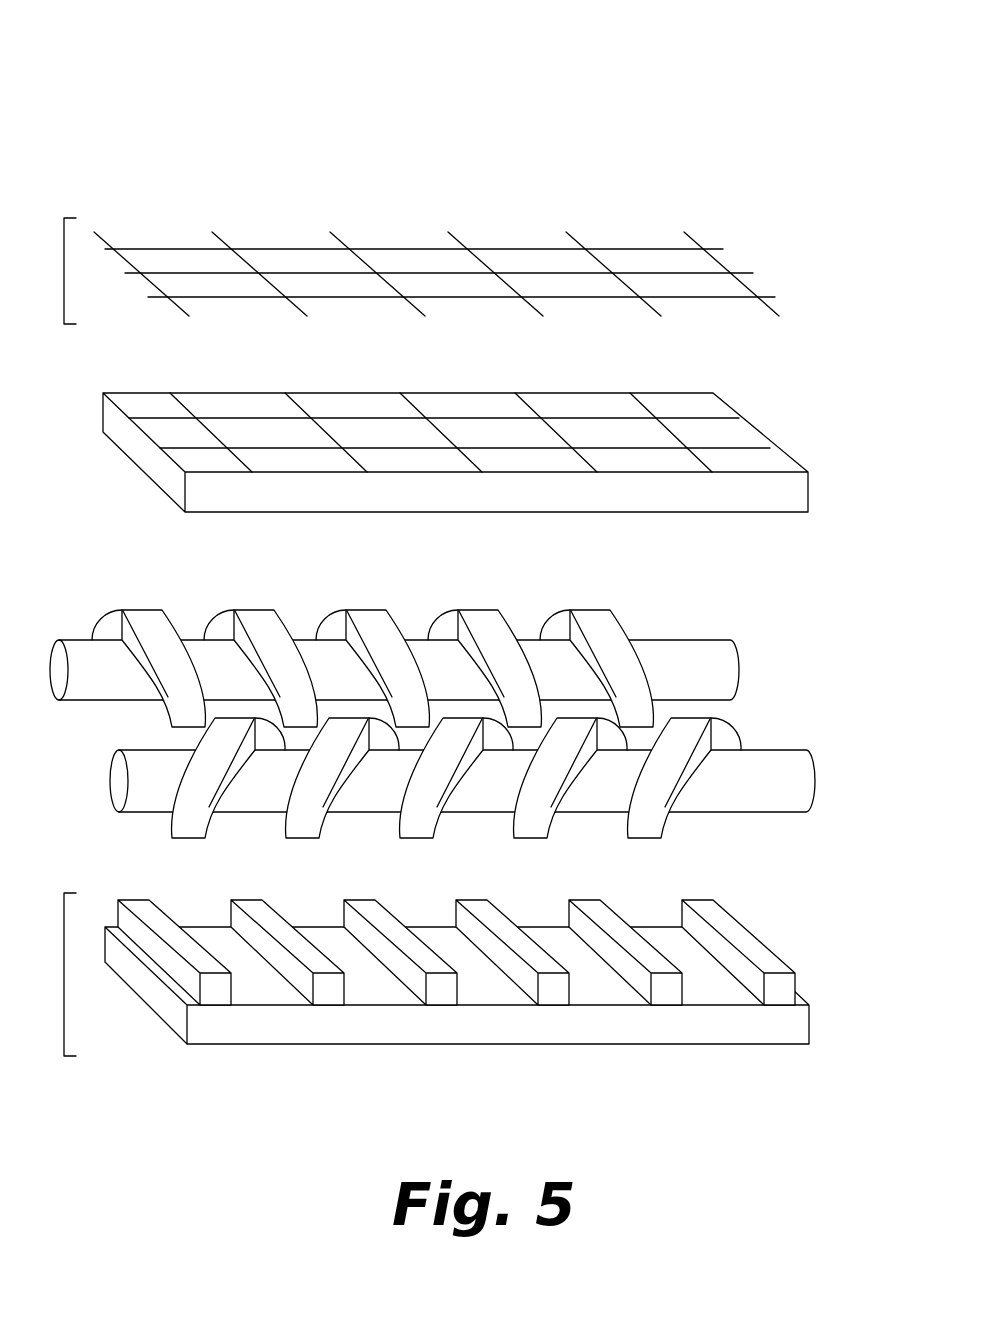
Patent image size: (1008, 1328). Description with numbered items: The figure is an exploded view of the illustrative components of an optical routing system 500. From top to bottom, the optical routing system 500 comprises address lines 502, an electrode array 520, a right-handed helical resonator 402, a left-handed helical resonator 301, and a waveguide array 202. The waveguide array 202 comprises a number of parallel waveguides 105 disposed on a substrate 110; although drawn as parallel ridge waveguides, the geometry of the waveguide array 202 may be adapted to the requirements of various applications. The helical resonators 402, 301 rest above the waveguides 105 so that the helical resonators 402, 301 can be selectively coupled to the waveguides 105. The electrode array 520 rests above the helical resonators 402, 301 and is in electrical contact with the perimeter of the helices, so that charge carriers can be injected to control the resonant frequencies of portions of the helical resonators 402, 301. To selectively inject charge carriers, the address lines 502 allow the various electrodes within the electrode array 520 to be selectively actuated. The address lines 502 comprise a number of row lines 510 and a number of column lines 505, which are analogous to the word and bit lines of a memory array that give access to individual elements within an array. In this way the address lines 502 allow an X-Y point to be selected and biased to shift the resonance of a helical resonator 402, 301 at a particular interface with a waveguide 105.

The optical routing system 500 is at (136, 76).
The address lines 502 is at (46, 233).
The column lines 505 is at (778, 306).
The row lines 510 is at (713, 250).
The electrode array 520 is at (803, 489).
The right-handed helical resonator 402 is at (766, 657).
The left-handed helical resonator 301 is at (842, 762).
The waveguide array 202 is at (60, 1033).
The waveguides 105 is at (795, 985).
The substrate 110 is at (805, 1030).